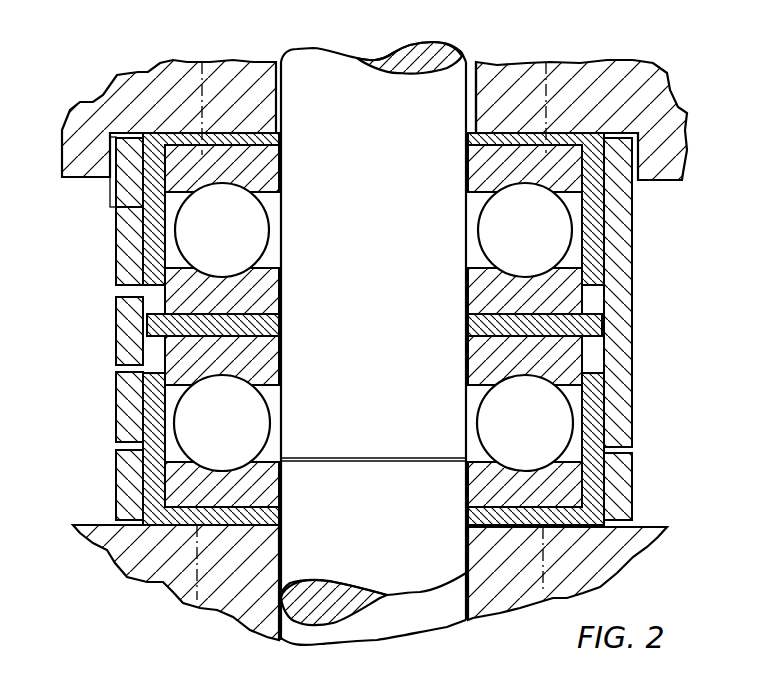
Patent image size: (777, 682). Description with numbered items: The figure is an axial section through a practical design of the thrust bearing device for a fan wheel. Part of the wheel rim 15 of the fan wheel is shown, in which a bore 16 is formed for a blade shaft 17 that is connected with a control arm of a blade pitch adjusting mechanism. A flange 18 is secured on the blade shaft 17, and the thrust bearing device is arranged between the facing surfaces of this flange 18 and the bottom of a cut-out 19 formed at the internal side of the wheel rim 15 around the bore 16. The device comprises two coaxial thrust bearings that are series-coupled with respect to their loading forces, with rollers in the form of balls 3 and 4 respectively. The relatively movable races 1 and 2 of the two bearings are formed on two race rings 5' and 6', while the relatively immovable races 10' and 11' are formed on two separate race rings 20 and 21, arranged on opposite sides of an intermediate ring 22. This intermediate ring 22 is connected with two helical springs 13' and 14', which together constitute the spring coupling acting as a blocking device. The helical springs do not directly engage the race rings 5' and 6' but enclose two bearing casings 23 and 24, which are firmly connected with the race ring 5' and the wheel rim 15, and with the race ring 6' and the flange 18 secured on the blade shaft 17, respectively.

The race 1 is at (587, 209).
The race 2 is at (583, 434).
The balls 3 is at (531, 265).
The balls 4 is at (529, 456).
The race ring 5' is at (577, 209).
The race ring 6' is at (180, 449).
The relatively immovable race 10' is at (631, 242).
The relatively immovable race 11' is at (579, 449).
The helical spring 13' is at (105, 246).
The helical spring 14' is at (105, 407).
The wheel rim 15 is at (673, 113).
The bore 16 is at (472, 76).
The blade shaft 17 is at (300, 63).
The flange 18 is at (647, 533).
The cut-out 19 is at (115, 183).
The race ring 20 is at (583, 299).
The race ring 21 is at (570, 363).
The intermediate ring 22 is at (157, 336).
The bearing casing 23 is at (152, 263).
The bearing casing 24 is at (157, 435).